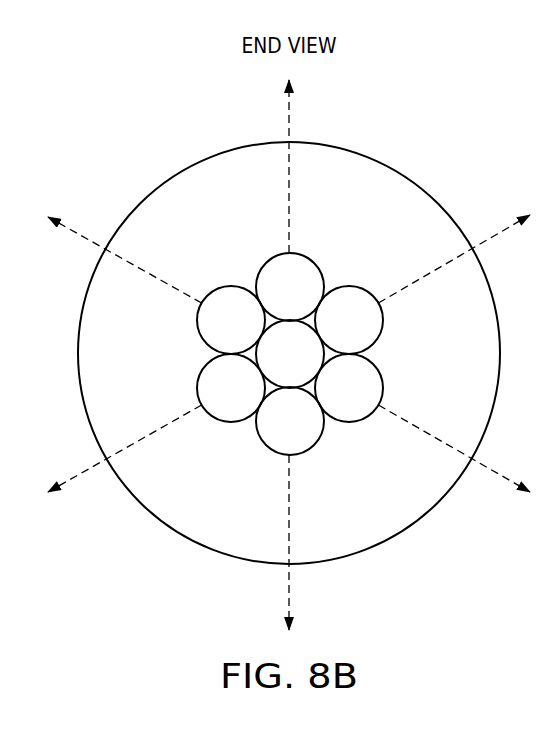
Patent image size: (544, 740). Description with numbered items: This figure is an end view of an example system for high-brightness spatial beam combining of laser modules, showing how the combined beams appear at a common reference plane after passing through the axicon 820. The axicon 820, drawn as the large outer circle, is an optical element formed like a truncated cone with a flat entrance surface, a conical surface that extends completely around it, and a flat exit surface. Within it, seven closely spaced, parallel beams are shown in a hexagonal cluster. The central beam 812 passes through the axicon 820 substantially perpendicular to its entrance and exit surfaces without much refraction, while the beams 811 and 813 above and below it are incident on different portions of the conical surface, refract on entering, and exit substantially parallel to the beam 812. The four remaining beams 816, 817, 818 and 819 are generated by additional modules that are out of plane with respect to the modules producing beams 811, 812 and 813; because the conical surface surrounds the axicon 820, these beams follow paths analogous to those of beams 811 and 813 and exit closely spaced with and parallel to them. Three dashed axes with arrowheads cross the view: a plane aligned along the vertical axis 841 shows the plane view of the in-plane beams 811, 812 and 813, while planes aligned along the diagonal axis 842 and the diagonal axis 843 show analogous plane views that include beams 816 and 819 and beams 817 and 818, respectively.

The beam 811 is at (268, 436).
The beam 812 is at (268, 369).
The beam 813 is at (268, 302).
The beam 816 is at (209, 335).
The beam 817 is at (209, 403).
The beam 818 is at (327, 335).
The beam 819 is at (327, 403).
The axicon 820 is at (190, 248).
The axis 841 is at (291, 120).
The axis 842 is at (91, 240).
The axis 843 is at (93, 467).